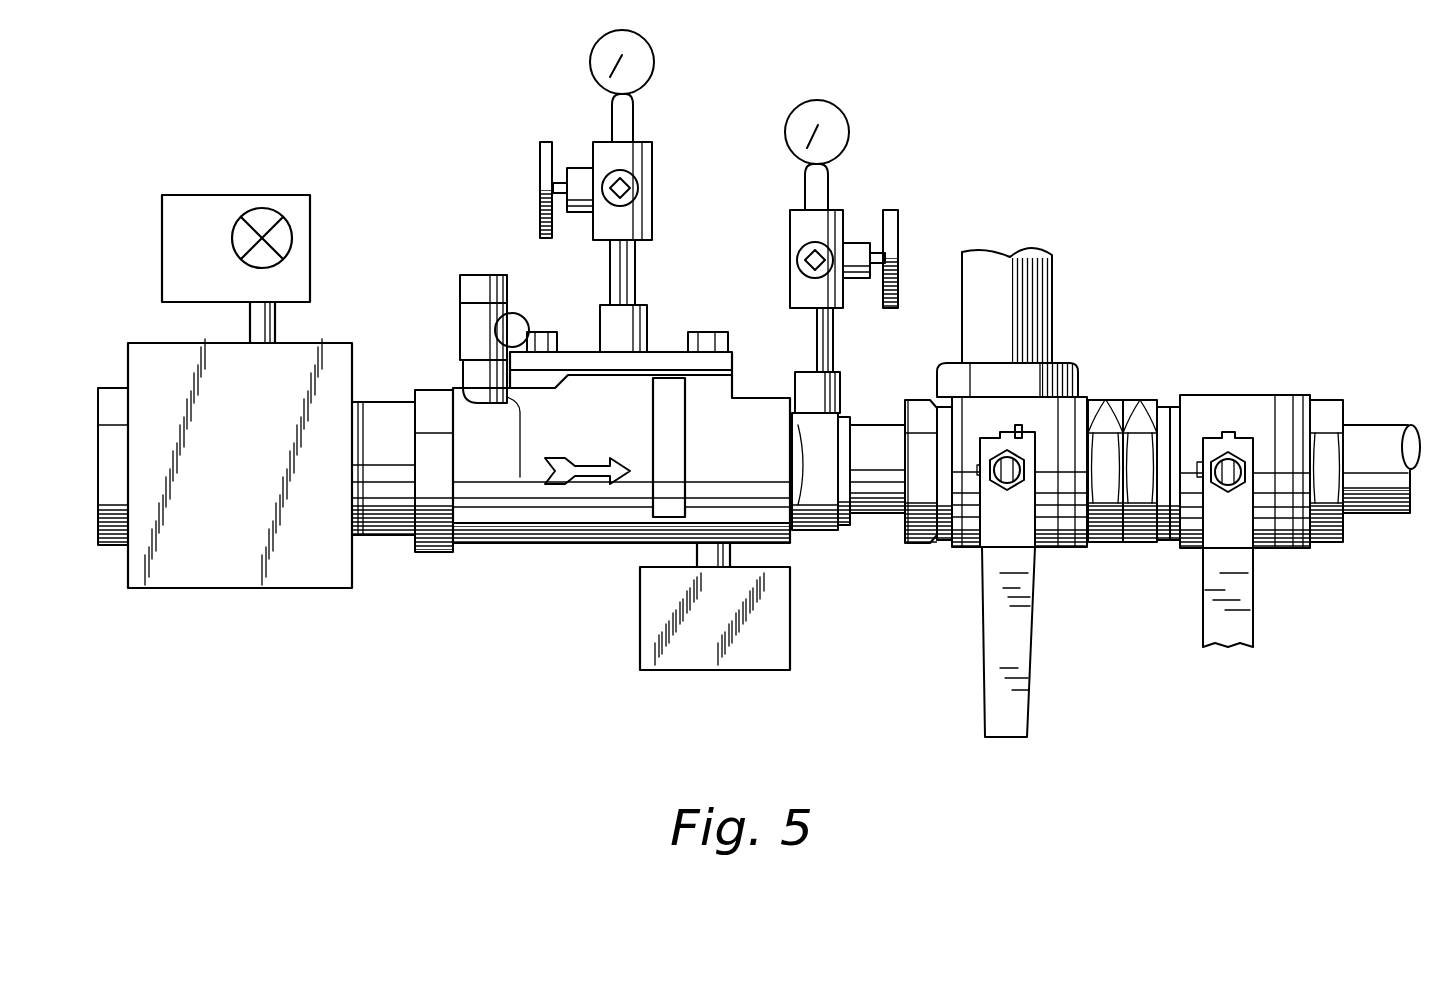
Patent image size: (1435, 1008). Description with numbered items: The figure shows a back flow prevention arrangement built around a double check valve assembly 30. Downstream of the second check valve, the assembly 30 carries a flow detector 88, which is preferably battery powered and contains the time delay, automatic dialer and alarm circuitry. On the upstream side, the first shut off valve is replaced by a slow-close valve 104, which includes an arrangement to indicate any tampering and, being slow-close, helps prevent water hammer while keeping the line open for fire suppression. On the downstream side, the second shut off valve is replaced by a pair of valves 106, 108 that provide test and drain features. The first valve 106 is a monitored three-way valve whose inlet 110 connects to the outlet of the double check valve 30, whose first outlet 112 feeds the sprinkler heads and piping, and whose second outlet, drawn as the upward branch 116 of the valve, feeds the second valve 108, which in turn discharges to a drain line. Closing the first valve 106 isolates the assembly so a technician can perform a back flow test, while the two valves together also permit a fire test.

The double check valve assembly 30 is at (558, 543).
The flow detector 88 is at (790, 670).
The slow-close valve 104 is at (352, 343).
The first valve 106 is at (1093, 547).
The second valve 108 is at (1323, 547).
The inlet 110 is at (917, 545).
The first outlet 112 is at (1103, 405).
The tee pipe 116 is at (1007, 362).